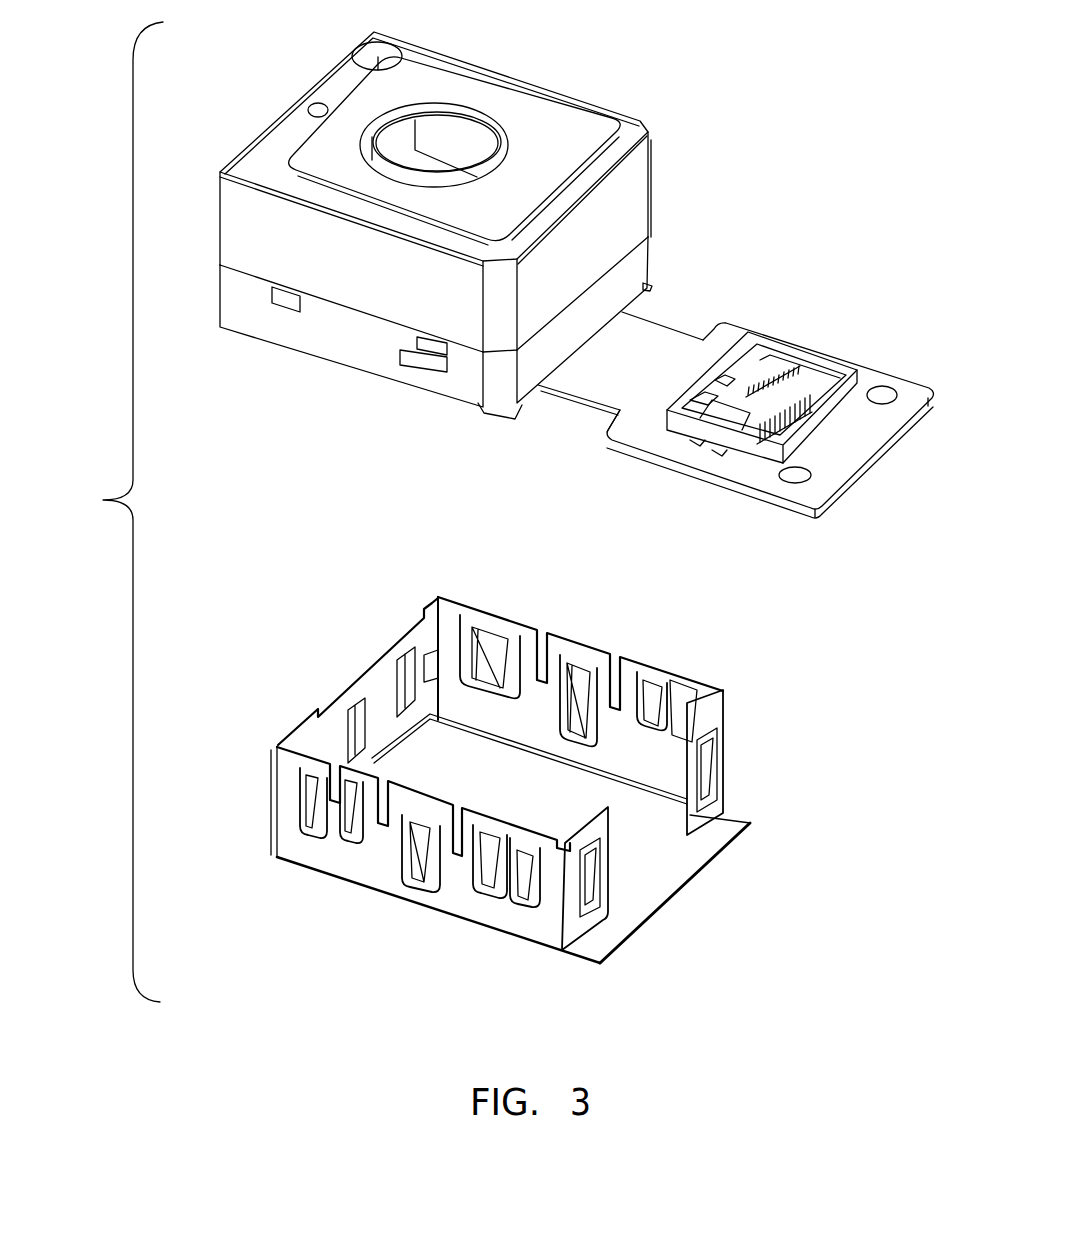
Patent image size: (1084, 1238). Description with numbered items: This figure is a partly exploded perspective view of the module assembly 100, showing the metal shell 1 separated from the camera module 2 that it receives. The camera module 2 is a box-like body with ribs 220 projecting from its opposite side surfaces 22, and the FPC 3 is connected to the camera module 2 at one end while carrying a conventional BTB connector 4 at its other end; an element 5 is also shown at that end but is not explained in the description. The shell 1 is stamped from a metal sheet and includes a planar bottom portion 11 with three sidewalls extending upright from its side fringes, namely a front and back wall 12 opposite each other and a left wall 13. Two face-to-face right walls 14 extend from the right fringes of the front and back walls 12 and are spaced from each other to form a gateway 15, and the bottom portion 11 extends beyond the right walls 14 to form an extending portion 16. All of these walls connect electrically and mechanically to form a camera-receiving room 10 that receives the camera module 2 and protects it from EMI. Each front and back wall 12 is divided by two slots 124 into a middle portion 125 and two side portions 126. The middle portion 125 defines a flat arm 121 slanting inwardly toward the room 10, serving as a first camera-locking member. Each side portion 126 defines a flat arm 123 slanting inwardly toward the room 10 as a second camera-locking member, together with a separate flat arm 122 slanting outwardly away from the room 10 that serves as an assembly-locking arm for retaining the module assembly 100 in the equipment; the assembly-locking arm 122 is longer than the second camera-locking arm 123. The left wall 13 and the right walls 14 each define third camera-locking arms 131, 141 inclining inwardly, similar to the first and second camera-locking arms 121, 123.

The module assembly 100 is at (109, 512).
The shell 1 is at (303, 635).
The camera-receiving room 10 is at (495, 763).
The bottom portion 11 is at (575, 871).
The front and back wall 12 is at (379, 881).
The flat arm 121 is at (423, 848).
The flat arm 122 is at (317, 793).
The flat arm 123 is at (353, 800).
The slots 124 is at (540, 640).
The middle portion 125 is at (557, 663).
The side portions 126 is at (452, 620).
The left wall 13 is at (350, 680).
The third camera-locking arm 131 is at (363, 690).
The right walls 14 is at (585, 920).
The third camera-locking arm 141 is at (707, 767).
The gateway 15 is at (627, 883).
The extending portion 16 is at (713, 838).
The camera module 2 is at (522, 120).
The side surfaces 22 is at (270, 243).
The ribs 220 is at (433, 357).
The FPC 3 is at (648, 340).
The BTB connector 4 is at (770, 373).
The circuit board 5 is at (777, 510).